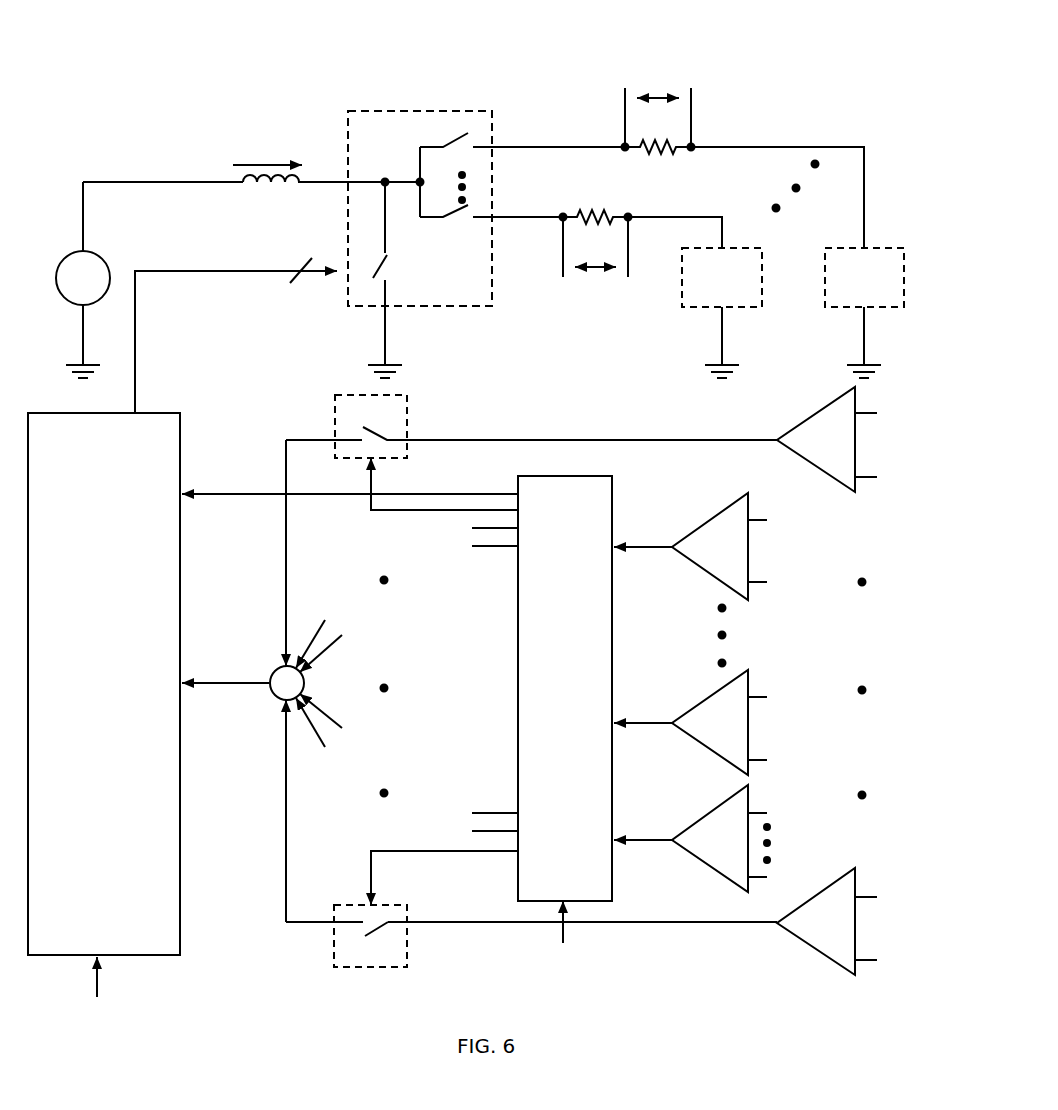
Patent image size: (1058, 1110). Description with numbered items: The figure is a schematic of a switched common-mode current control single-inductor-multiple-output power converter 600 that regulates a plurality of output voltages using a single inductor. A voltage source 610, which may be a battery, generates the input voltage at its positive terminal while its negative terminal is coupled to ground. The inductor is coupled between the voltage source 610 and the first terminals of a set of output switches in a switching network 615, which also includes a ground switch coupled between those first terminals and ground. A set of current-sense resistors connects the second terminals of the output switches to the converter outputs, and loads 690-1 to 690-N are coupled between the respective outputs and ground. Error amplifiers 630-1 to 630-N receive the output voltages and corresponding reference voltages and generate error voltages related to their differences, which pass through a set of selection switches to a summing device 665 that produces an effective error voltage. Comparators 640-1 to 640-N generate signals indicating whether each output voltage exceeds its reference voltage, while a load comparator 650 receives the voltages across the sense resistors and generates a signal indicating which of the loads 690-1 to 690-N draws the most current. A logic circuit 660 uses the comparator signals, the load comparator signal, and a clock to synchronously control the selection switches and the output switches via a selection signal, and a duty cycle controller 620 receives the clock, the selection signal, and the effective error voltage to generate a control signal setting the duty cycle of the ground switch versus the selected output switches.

The power converter 600 is at (499, 64).
The voltage source 610 is at (81, 251).
The switching network 615 is at (405, 110).
The duty cycle controller 620 is at (104, 721).
The error amplifier 630-1 is at (830, 403).
The error amplifier 630-N is at (822, 953).
The comparator 640-1 is at (722, 508).
The comparator 640-N is at (722, 688).
The load comparator 650 is at (722, 878).
The logic circuit 660 is at (542, 725).
The summing device 665 is at (275, 696).
The load 690-1 is at (722, 313).
The load 690-N is at (864, 313).